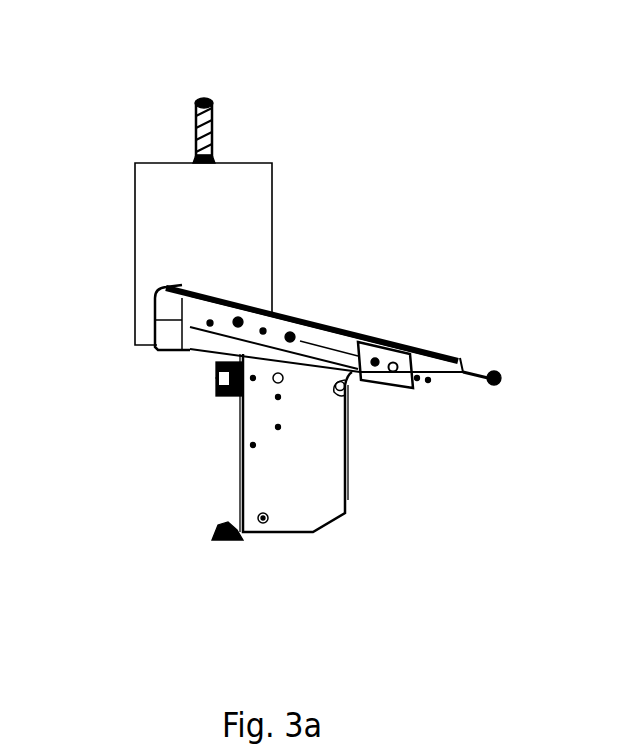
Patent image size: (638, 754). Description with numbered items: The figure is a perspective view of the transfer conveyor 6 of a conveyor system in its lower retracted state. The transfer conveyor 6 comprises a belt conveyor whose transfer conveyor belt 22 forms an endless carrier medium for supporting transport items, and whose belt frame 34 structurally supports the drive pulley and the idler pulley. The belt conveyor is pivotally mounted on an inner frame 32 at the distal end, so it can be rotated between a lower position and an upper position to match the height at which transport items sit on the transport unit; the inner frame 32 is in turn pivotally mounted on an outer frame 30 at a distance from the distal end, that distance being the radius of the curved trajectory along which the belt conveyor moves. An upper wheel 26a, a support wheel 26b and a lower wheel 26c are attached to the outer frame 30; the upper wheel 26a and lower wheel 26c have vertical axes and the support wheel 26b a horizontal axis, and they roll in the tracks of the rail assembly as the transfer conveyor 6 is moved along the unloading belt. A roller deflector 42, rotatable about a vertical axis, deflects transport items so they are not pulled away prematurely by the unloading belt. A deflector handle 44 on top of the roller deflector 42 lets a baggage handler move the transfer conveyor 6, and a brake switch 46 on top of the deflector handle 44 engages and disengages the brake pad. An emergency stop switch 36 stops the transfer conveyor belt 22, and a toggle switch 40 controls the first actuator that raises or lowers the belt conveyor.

The transfer conveyor 6 is at (345, 135).
The transfer conveyor belt 22 is at (462, 362).
The upper wheel 26a is at (217, 368).
The support wheel 26b is at (217, 395).
The lower wheel 26c is at (217, 537).
The outer frame 30 is at (275, 507).
The inner frame 32 is at (205, 340).
The belt frame 34 is at (318, 348).
The emergency stop switch 36 is at (393, 374).
The toggle switch 40 is at (388, 348).
The roller deflector 42 is at (150, 232).
The deflector handle 44 is at (198, 150).
The brake switch 46 is at (200, 100).